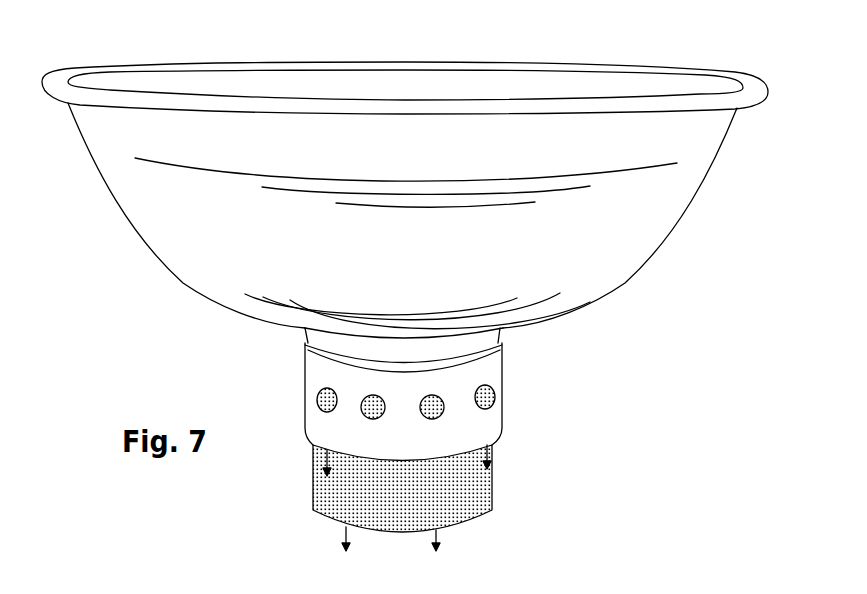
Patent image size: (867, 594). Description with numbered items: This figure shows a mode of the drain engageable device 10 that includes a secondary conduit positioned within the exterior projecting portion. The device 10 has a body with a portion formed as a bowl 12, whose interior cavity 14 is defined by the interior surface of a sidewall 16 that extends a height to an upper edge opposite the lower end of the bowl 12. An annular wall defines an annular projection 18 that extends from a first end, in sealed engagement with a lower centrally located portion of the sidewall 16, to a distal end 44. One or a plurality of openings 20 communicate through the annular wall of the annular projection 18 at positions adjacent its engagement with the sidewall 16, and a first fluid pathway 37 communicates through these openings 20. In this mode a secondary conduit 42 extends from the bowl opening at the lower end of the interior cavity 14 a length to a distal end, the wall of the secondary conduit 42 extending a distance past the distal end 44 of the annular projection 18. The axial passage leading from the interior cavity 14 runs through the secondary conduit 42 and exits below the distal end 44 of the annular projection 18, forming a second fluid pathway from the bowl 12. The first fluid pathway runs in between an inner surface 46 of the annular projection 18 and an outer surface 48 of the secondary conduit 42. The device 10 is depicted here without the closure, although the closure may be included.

The drain engageable device 10 is at (675, 257).
The bowl 12 is at (68, 105).
The interior cavity 14 is at (505, 87).
The sidewall 16 is at (117, 160).
The annular projection 18 is at (310, 356).
The openings 20 is at (376, 411).
The first fluid pathway 37 is at (324, 411).
The secondary conduit 42 is at (313, 510).
The distal end 44 is at (315, 435).
The inner surface 46 is at (487, 449).
The outer surface 48 is at (482, 498).